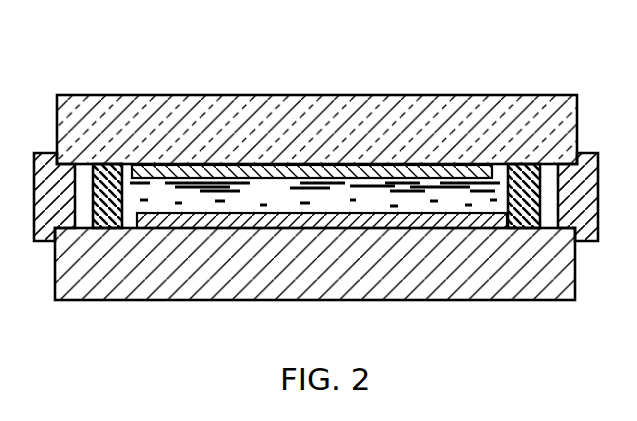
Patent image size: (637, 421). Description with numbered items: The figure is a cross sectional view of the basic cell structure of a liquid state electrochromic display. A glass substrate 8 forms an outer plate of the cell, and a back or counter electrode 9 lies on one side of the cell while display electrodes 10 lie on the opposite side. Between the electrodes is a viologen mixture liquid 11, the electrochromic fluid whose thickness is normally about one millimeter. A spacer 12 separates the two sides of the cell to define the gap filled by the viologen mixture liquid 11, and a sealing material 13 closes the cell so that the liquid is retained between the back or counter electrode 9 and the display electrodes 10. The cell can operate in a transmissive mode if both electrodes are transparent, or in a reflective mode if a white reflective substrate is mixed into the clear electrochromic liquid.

The glass substrate 8 is at (400, 96).
The back or counter electrode 9 is at (438, 165).
The display electrodes 10 is at (474, 216).
The viologen mixture liquid 11 is at (285, 196).
The spacer 12 is at (108, 229).
The sealing material 13 is at (57, 146).